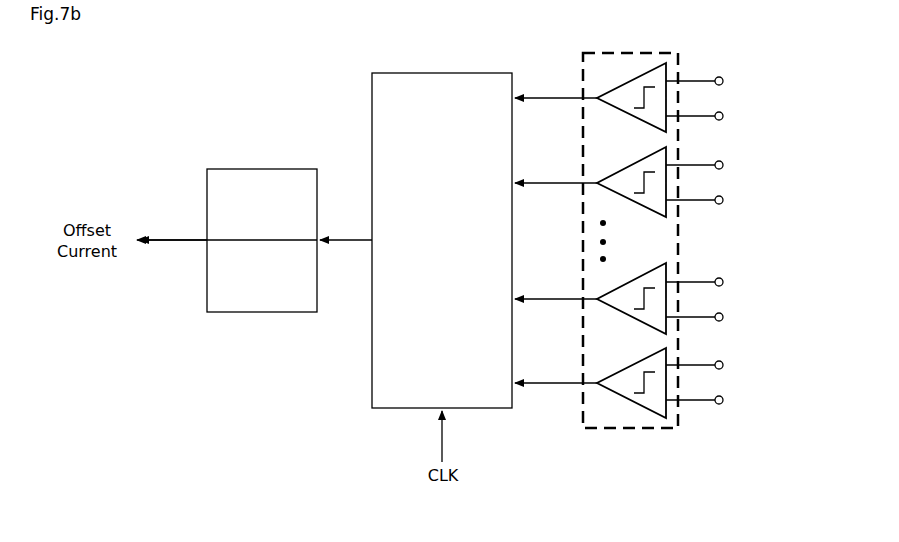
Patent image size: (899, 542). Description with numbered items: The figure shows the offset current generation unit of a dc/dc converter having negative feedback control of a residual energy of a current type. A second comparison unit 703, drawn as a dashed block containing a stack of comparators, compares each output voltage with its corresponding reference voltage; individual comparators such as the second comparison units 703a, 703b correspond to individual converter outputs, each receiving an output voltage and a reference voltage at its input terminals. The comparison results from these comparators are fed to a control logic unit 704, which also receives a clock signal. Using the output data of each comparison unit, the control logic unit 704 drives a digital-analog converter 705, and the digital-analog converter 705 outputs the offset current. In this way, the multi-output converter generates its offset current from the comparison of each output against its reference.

The second comparison unit 703 is at (663, 260).
The second comparison unit 703a is at (620, 371).
The second comparison unit 703b is at (620, 287).
The control logic unit 704 is at (372, 383).
The digital-analog converter 705 is at (207, 287).